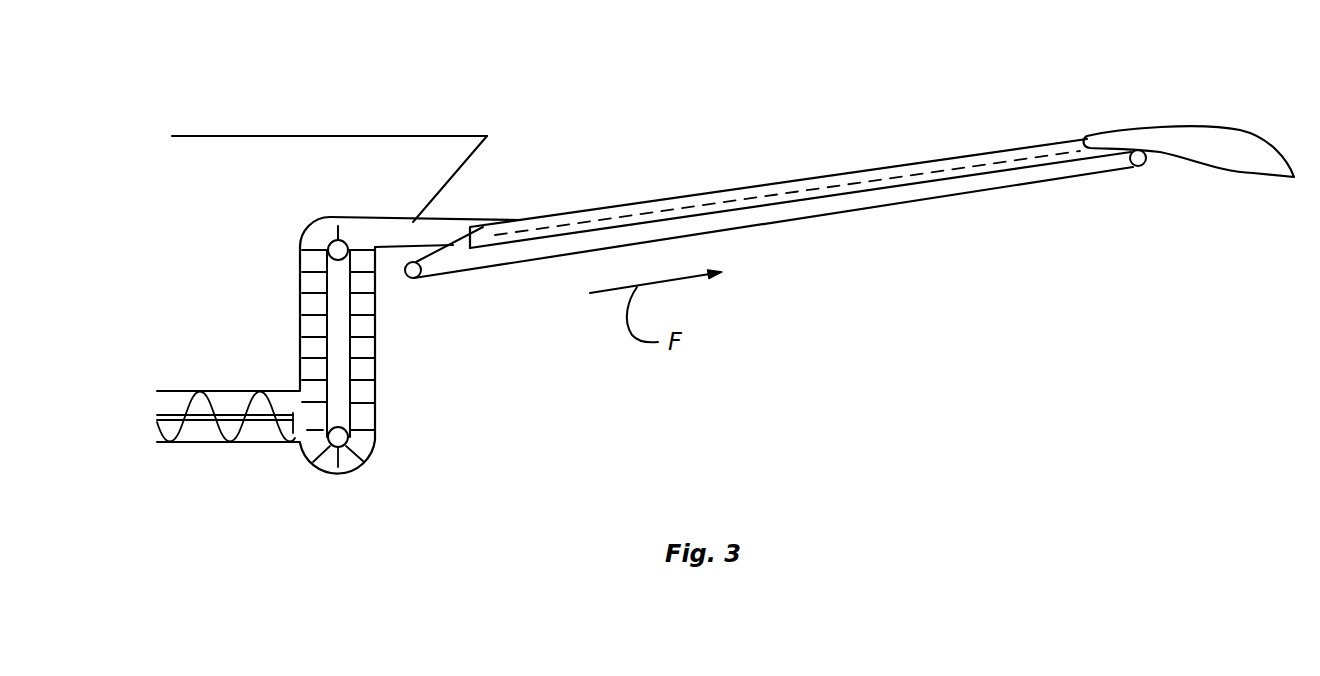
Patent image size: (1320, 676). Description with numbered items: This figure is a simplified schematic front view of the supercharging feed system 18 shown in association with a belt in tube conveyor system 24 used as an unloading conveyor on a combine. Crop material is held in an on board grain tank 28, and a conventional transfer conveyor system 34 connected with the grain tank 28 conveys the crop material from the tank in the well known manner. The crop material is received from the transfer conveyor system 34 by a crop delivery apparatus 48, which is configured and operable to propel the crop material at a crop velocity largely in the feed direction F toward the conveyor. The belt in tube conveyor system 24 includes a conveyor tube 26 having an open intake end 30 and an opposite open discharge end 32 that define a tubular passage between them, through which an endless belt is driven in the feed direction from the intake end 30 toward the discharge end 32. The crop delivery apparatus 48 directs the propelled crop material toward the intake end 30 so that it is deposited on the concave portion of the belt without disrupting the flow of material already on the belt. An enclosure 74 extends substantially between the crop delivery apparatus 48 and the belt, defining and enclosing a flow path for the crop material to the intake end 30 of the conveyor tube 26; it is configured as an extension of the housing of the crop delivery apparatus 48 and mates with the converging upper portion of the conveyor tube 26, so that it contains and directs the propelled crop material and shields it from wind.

The supercharging feed system 18 is at (456, 102).
The belt in tube conveyor system 24 is at (849, 178).
The conveyor tube 26 is at (961, 155).
The grain tank 28 is at (235, 111).
The intake end 30 is at (458, 229).
The discharge end 32 is at (1145, 167).
The transfer conveyor system 34 is at (220, 443).
The crop delivery apparatus 48 is at (273, 302).
The enclosure 74 is at (498, 228).